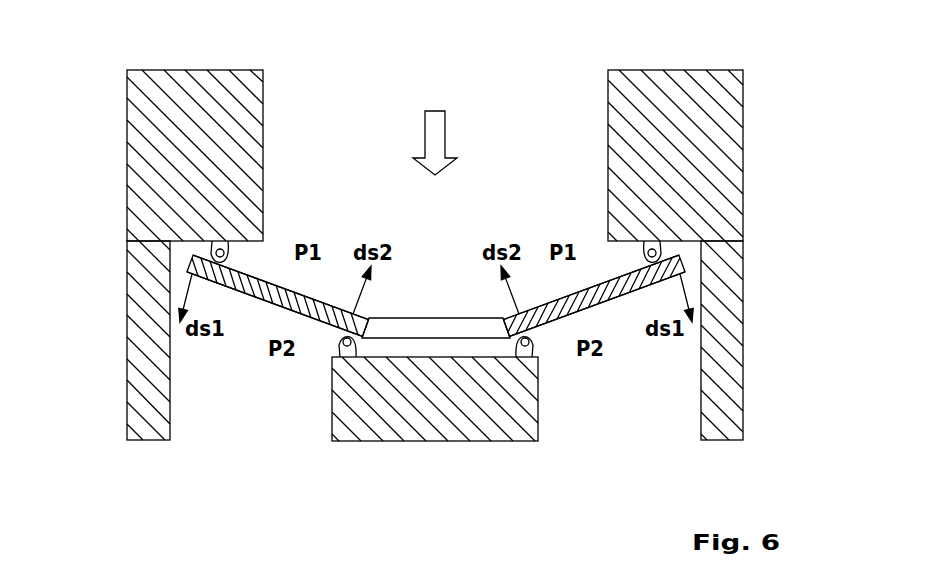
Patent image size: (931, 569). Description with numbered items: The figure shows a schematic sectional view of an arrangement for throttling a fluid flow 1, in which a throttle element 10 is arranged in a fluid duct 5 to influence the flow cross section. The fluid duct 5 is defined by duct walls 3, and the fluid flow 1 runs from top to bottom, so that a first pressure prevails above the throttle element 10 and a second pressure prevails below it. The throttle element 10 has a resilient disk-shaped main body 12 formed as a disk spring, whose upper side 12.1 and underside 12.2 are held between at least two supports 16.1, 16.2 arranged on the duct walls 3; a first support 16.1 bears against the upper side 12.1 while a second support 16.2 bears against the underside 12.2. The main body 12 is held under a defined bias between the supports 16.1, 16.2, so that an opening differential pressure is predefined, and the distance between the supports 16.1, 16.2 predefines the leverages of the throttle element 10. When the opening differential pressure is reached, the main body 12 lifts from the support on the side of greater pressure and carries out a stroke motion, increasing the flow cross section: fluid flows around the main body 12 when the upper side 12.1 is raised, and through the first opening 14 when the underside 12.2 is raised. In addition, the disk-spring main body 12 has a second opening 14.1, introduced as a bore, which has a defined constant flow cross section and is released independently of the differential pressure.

The fluid flow 1 is at (437, 125).
The duct walls 3 is at (147, 175).
The fluid duct 5 is at (312, 115).
The throttle element 10 is at (522, 92).
The resilient disk-shaped main body 12 is at (319, 300).
The upper side 12.1 is at (283, 273).
The underside 12.2 is at (307, 331).
The first opening 14 is at (450, 326).
The second opening 14.1 is at (243, 290).
The first support 16.1 is at (212, 246).
The second support 16.2 is at (340, 352).